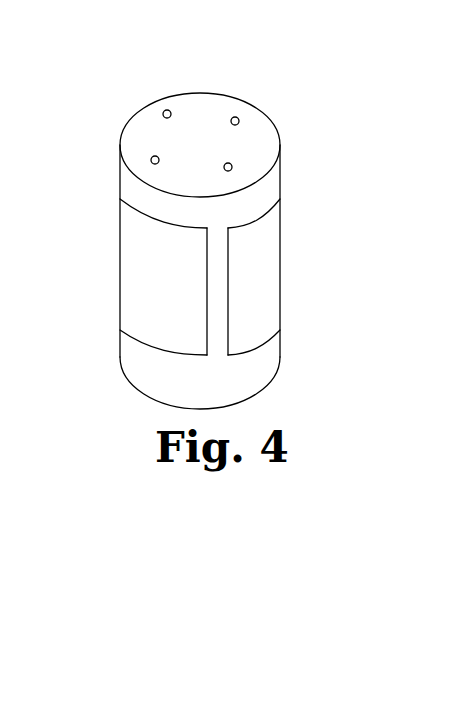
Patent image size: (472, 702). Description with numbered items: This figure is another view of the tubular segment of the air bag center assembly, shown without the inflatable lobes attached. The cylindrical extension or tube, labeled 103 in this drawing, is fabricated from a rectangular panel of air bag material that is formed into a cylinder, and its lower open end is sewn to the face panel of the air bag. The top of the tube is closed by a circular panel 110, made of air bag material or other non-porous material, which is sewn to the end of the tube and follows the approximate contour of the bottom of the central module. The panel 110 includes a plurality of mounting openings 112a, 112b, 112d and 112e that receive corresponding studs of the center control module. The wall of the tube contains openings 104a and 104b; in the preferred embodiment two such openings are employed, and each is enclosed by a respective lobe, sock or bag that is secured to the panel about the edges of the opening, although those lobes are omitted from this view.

The cylindrical body 103 is at (117, 171).
The panel 110 is at (200, 100).
The mounting opening 112a is at (233, 165).
The mounting opening 112b is at (238, 117).
The mounting opening 112d is at (152, 157).
The hole 112e is at (164, 110).
The opening 104a is at (148, 333).
The opening 104b is at (280, 200).